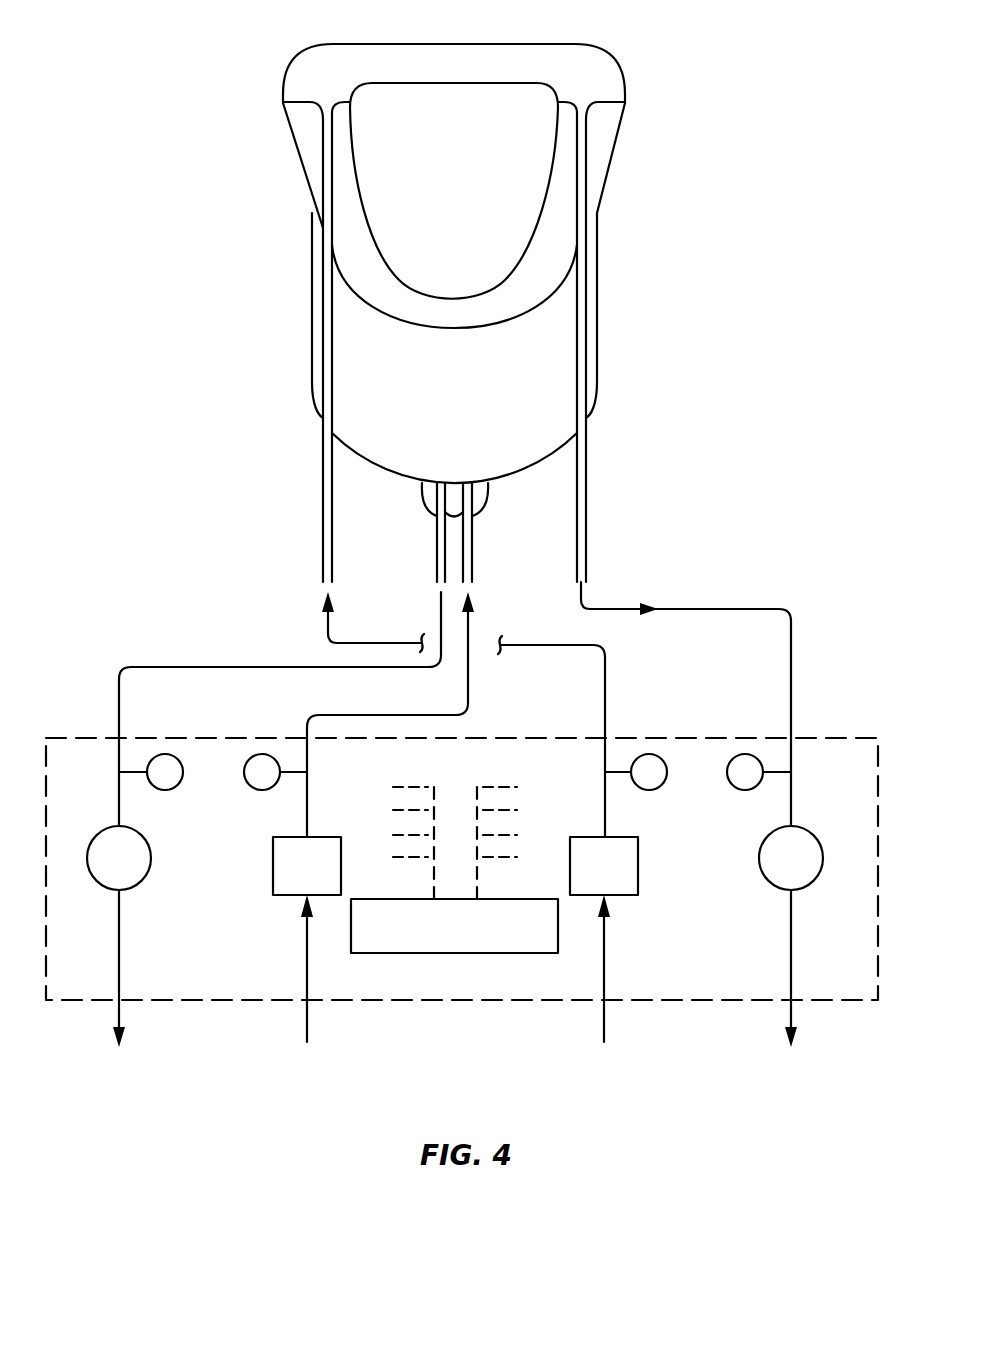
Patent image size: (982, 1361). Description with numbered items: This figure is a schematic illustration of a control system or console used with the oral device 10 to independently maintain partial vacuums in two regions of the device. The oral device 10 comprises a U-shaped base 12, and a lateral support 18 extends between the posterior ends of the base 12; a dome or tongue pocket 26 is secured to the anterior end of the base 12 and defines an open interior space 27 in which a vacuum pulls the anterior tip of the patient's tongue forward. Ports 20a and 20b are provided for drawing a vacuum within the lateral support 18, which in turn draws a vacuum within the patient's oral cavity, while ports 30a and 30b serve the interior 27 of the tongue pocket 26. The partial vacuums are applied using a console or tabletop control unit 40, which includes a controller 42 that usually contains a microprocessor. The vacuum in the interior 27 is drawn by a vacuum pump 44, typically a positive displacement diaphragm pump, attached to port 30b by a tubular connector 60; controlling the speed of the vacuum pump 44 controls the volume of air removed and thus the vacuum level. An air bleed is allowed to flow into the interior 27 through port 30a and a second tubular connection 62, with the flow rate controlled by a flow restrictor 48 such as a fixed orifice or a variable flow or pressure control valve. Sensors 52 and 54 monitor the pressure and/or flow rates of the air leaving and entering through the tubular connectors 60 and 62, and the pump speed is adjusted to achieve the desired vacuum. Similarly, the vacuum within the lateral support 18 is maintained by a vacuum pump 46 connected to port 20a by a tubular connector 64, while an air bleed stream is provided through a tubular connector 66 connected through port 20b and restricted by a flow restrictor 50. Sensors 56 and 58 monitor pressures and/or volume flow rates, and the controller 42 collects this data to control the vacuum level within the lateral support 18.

The oral device 10 is at (212, 113).
The base 12 is at (370, 278).
The lateral support 18 is at (562, 48).
The port 20a is at (586, 418).
The port 20b is at (323, 418).
The tongue pocket 26 is at (597, 340).
The interior space 27 is at (454, 429).
The port 30a is at (474, 515).
The port 30b is at (433, 513).
The control unit 40 is at (828, 737).
The controller 42 is at (498, 899).
The vacuum pump 44 is at (140, 835).
The vacuum pump 46 is at (770, 840).
The flow restrictor 48 is at (320, 837).
The flow restrictor 50 is at (617, 837).
The sensor 52 is at (165, 754).
The sensor 54 is at (262, 754).
The sensor 56 is at (649, 754).
The sensor 58 is at (745, 754).
The tubular connector 60 is at (266, 667).
The tubular connection 62 is at (415, 715).
The tubular connector 64 is at (713, 609).
The tubular connector 66 is at (527, 645).